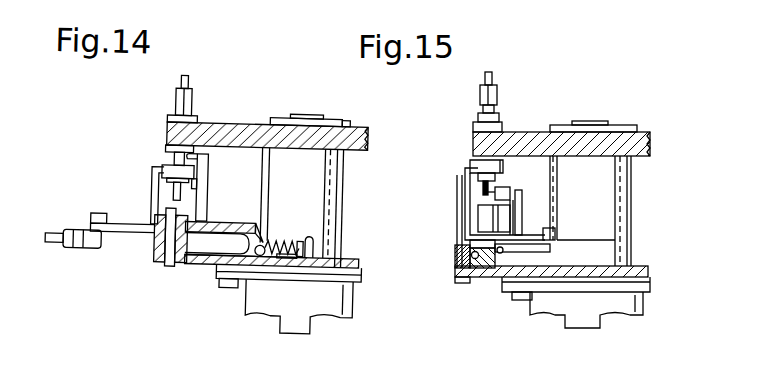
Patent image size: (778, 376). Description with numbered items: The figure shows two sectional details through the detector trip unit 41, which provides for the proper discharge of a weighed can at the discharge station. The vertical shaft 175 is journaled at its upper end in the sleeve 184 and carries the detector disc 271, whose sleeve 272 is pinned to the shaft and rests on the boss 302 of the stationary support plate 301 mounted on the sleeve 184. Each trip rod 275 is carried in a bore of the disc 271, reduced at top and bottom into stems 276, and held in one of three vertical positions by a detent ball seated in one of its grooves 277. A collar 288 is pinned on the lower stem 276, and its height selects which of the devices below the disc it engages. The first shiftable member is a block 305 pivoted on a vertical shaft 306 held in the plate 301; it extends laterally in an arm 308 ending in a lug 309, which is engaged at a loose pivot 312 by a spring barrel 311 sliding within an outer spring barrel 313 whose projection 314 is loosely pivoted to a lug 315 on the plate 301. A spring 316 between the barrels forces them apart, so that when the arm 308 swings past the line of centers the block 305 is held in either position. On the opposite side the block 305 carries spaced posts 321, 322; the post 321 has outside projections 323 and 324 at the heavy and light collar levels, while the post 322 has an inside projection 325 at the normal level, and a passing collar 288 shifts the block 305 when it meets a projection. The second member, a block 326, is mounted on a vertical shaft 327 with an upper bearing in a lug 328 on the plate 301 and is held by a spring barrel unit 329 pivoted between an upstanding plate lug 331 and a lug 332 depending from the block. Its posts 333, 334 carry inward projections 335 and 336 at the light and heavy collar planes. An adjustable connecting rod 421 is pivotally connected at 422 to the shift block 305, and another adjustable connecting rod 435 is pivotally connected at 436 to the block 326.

In FIG. 14, the detector trip unit 41 is at (256, 108).
In FIG. 15, the detector trip unit 41 is at (576, 114).
In FIG. 14, the vertical shaft 175 is at (311, 114).
In FIG. 15, the vertical shaft 175 is at (592, 124).
In FIG. 14, the sleeve 184 is at (360, 298).
In FIG. 15, the sleeve 184 is at (645, 303).
In FIG. 14, the detector disc 271 is at (257, 123).
In FIG. 15, the detector disc 271 is at (540, 132).
In FIG. 14, the sleeve 272 is at (312, 208).
In FIG. 15, the sleeve 272 is at (606, 211).
In FIG. 14, the trip rod 275 is at (192, 93).
In FIG. 15, the trip rod 275 is at (498, 93).
In FIG. 14, the stems 276 is at (188, 78).
In FIG. 15, the stems 276 is at (493, 77).
In FIG. 15, the grooves 277 is at (483, 109).
In FIG. 14, the collar 288 is at (169, 147).
In FIG. 15, the collar 288 is at (472, 132).
In FIG. 14, the support plate 301 is at (366, 259).
In FIG. 15, the support plate 301 is at (652, 271).
In FIG. 15, the boss 302 is at (628, 252).
In FIG. 14, the block 305 is at (161, 243).
In FIG. 14, the vertical shaft 306 is at (173, 266).
In FIG. 14, the arm 308 is at (246, 213).
In FIG. 14, the lug 309 is at (270, 224).
In FIG. 14, the spring barrel 311 is at (266, 255).
In FIG. 14, the pivotal engagement 312 is at (254, 246).
In FIG. 14, the outer spring barrel 313 is at (291, 257).
In FIG. 14, the projection 314 is at (306, 255).
In FIG. 14, the lug 315 is at (318, 240).
In FIG. 14, the spring 316 is at (290, 238).
In FIG. 14, the post 321 is at (210, 170).
In FIG. 14, the post 322 is at (155, 186).
In FIG. 14, the upper projection 323 is at (199, 155).
In FIG. 14, the lower projection 324 is at (199, 186).
In FIG. 14, the projection 325 is at (166, 168).
In FIG. 15, the block 326 is at (546, 228).
In FIG. 15, the vertical shaft 327 is at (476, 269).
In FIG. 15, the lug 328 is at (470, 195).
In FIG. 15, the spring barrel unit 329 is at (456, 256).
In FIG. 15, the lug 331 is at (458, 270).
In FIG. 15, the lug 332 is at (470, 245).
In FIG. 15, the post 333 is at (516, 209).
In FIG. 15, the post 334 is at (477, 177).
In FIG. 15, the projection 335 is at (508, 188).
In FIG. 15, the projection 336 is at (471, 166).
In FIG. 14, the adjustable connecting rod 421 is at (58, 235).
In FIG. 14, the pivotal connection 422 is at (106, 207).
In FIG. 15, the adjustable connecting rod 435 is at (499, 266).
In FIG. 15, the pivotal connection 436 is at (550, 229).